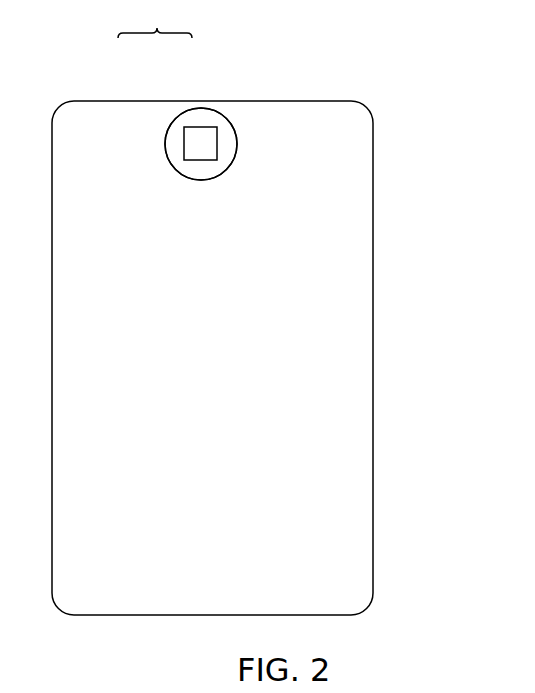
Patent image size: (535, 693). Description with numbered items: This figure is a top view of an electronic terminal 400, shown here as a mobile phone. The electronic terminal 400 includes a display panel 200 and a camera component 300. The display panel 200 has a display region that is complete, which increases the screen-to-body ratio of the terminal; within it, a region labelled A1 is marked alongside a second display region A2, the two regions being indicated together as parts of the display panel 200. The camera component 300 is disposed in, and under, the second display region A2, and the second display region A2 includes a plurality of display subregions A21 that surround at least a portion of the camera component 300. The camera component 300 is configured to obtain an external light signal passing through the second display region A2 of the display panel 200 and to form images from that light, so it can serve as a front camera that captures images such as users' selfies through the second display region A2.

The electronic terminal 400 is at (330, 90).
The display panel 200 is at (155, 19).
The first display area A1 is at (118, 118).
The second display region A2 is at (198, 108).
The display subregion A21 is at (222, 143).
The camera component 300 is at (197, 161).